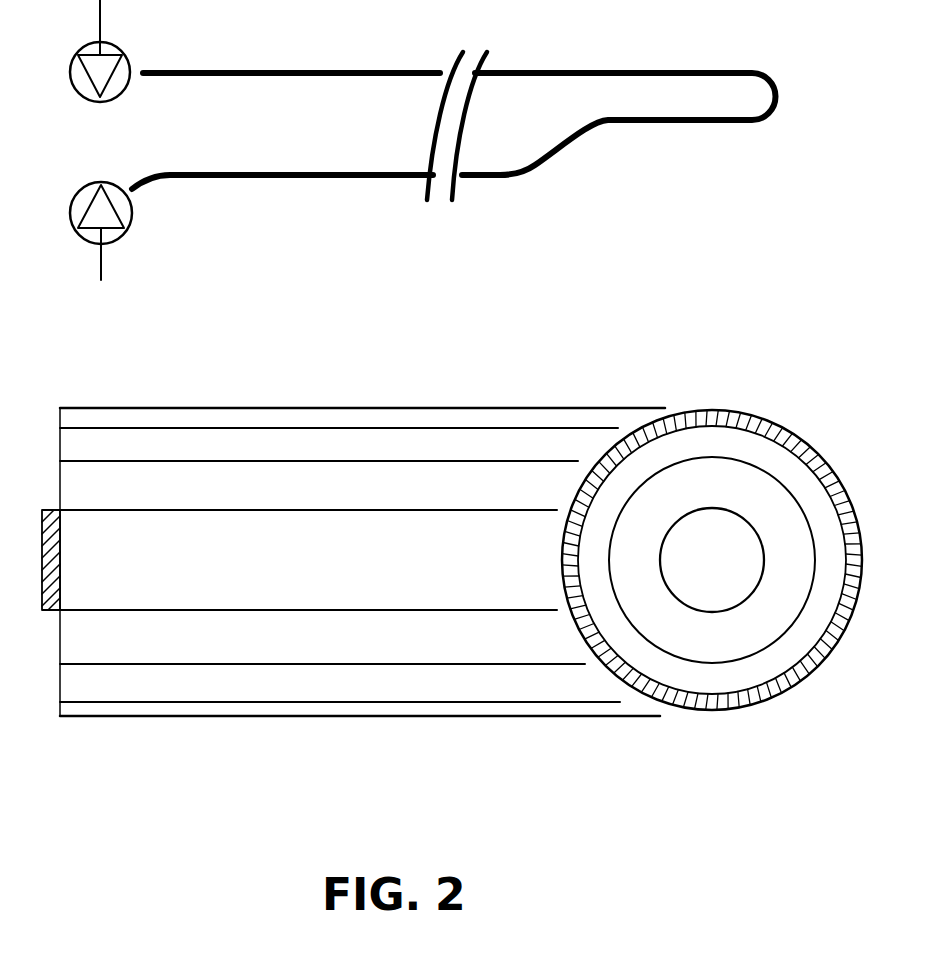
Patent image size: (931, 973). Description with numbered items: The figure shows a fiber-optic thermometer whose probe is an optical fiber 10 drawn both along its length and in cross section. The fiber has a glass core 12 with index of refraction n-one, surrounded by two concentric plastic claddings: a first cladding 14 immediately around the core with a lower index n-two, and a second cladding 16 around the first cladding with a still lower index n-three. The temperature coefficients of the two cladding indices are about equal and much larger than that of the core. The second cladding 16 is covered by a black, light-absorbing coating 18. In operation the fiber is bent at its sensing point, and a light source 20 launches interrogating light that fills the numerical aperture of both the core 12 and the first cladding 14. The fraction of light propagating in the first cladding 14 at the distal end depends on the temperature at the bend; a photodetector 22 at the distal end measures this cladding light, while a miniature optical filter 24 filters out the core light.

The optical fiber 10 is at (503, 185).
The glass core 12 is at (400, 560).
The first cladding 14 is at (412, 562).
The second cladding 16 is at (740, 443).
The light-absorbing coating 18 is at (800, 448).
The light source 20 is at (67, 57).
The photodetector 22 is at (121, 246).
The miniature optical filter 24 is at (35, 590).